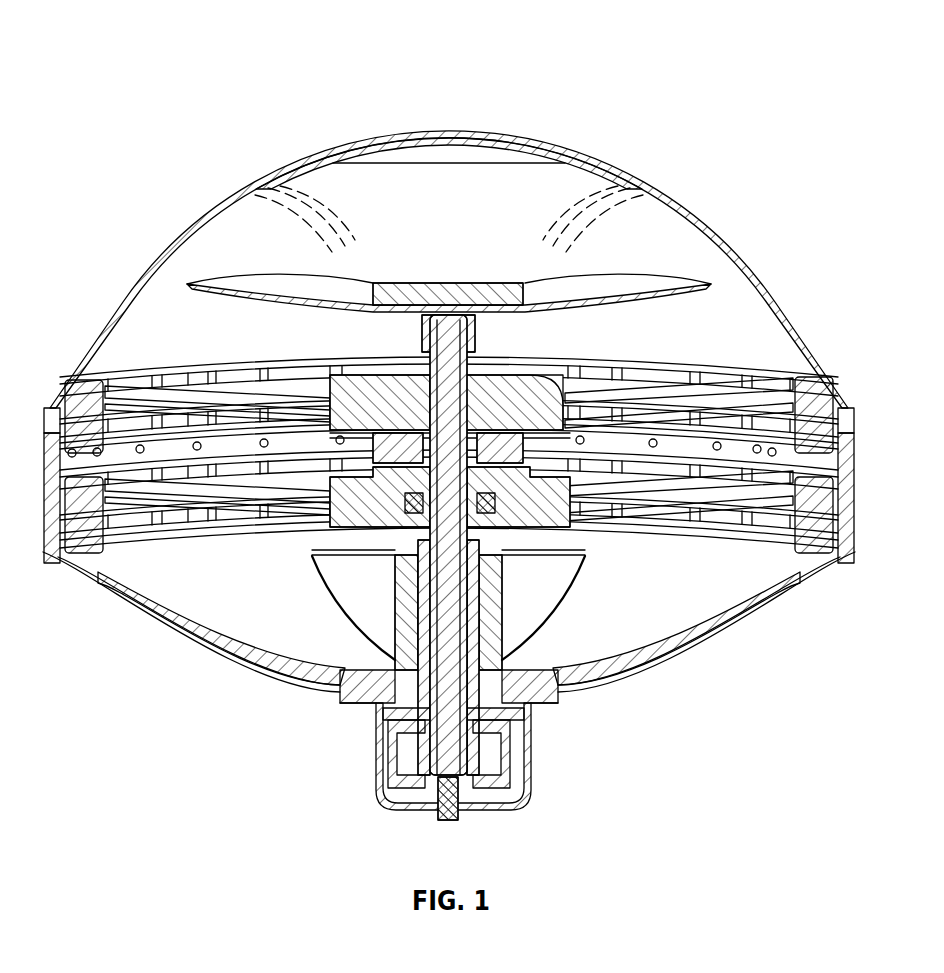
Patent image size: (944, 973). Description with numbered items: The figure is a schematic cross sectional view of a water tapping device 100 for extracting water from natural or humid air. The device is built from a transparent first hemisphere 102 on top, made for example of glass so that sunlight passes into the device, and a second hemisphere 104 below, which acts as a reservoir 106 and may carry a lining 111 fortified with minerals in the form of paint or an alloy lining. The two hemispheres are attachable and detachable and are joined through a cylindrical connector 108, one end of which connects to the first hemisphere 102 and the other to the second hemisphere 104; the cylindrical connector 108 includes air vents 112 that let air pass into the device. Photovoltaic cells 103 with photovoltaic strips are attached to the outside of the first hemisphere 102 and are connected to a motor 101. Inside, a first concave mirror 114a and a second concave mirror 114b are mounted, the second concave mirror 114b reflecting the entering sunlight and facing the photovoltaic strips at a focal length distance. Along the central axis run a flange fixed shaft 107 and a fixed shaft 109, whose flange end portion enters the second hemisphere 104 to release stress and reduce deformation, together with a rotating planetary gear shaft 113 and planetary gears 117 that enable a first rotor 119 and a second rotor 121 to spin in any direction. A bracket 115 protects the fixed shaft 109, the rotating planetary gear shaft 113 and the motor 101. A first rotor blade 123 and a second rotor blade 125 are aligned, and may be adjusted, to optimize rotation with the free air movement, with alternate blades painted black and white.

The water tapping device 100 is at (213, 44).
The motor 101 is at (408, 786).
The first hemisphere 102 is at (255, 219).
The photovoltaic cells 103 is at (448, 157).
The second hemisphere 104 is at (180, 570).
The reservoir 106 is at (705, 641).
The flange fixed shaft 107 is at (612, 671).
The cylindrical connector 108 is at (368, 398).
The fixed shaft 109 is at (450, 760).
The lining 111 is at (353, 597).
The air vents 112 is at (198, 444).
The rotating planetary gear shaft 113 is at (475, 437).
The first concave mirror 114a is at (522, 146).
The second concave mirror 114b is at (673, 278).
The bracket 115 is at (372, 757).
The planetary gears 117 is at (548, 420).
The first rotor 119 is at (565, 418).
The second rotor 121 is at (543, 492).
The first rotor blade 123 is at (680, 395).
The second rotor blade 125 is at (657, 521).